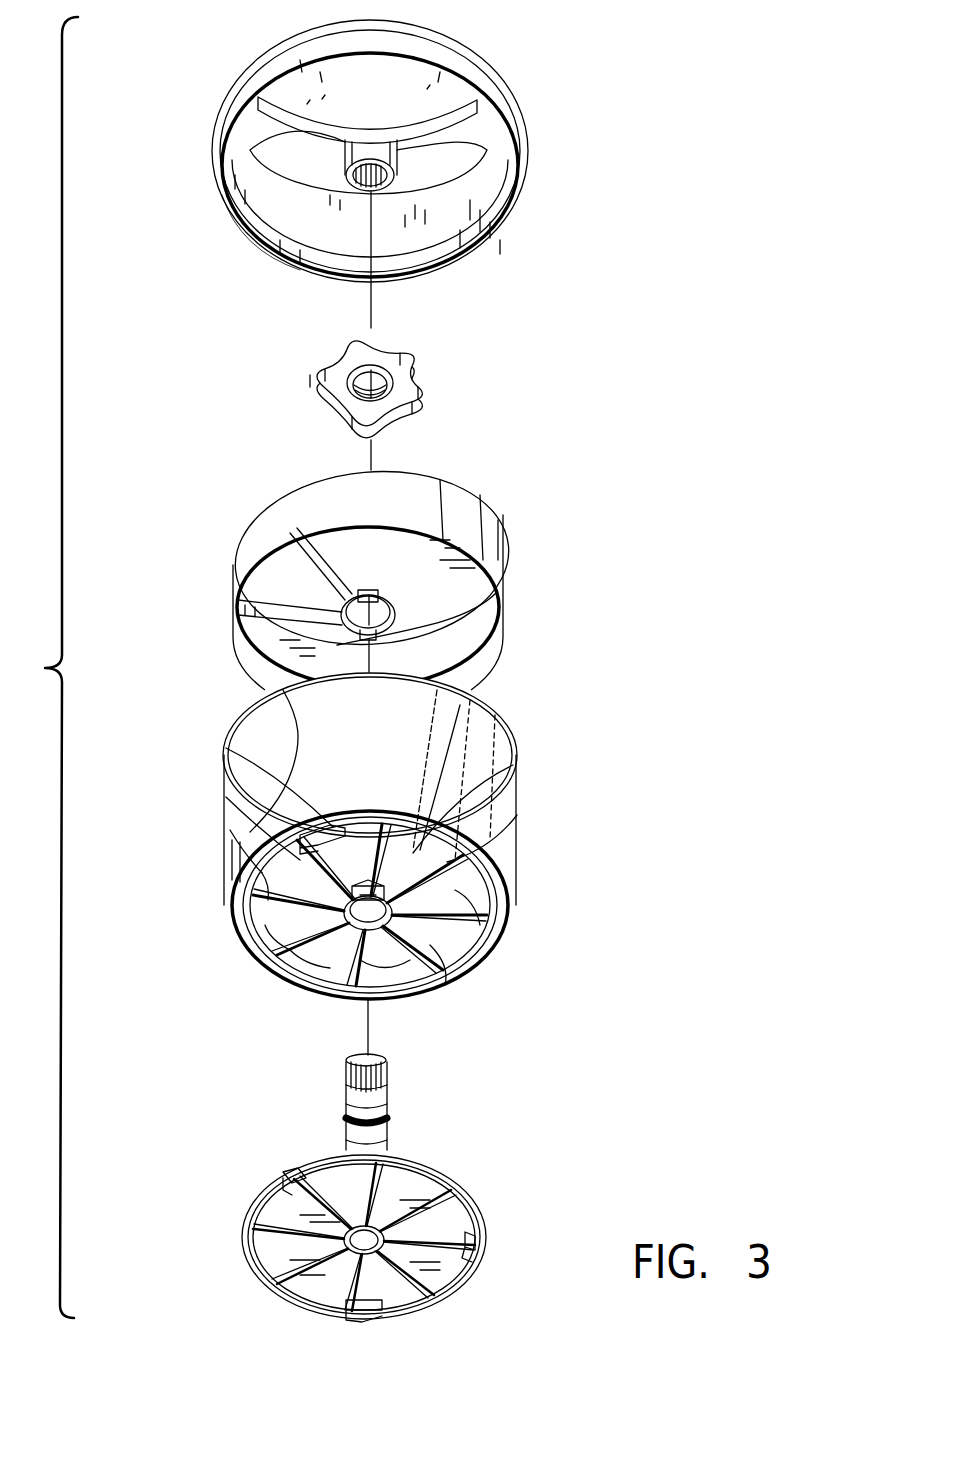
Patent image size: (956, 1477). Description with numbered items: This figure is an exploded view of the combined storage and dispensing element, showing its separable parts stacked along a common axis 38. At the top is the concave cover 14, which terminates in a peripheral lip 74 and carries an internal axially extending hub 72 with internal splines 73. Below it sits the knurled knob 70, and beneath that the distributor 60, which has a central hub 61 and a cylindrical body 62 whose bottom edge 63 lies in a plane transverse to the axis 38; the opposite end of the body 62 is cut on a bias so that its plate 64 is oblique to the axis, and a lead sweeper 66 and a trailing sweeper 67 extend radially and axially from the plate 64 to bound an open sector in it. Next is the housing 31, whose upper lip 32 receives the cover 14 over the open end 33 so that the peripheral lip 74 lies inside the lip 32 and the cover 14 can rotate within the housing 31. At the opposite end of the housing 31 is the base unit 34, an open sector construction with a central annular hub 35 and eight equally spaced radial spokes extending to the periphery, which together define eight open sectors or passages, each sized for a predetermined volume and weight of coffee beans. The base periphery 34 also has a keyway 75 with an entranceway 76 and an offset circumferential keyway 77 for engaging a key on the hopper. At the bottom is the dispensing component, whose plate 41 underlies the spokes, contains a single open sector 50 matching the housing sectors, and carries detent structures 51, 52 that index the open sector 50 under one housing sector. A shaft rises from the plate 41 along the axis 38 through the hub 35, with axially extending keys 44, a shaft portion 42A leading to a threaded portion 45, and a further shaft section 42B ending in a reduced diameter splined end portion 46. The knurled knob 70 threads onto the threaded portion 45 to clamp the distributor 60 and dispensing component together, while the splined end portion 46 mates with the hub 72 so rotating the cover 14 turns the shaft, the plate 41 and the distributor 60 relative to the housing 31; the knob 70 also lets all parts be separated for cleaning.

The cover 14 is at (402, 160).
The internal axially extending hub 72 is at (385, 148).
The internal splines 73 is at (362, 188).
The peripheral lip 74 is at (478, 235).
The axis 38 is at (373, 287).
The knurled knob 70 is at (323, 360).
The distributor 60 is at (366, 559).
The cylindrical body 62 is at (253, 557).
The bottom edge 63 is at (498, 648).
The plate 64 is at (262, 648).
The trailing sweeper 67 is at (318, 555).
The lead sweeper 66 is at (268, 610).
The central hub 61 is at (398, 608).
The housing 31 is at (383, 854).
The upper lip 32 is at (227, 750).
The open end 33 is at (248, 742).
The keyway 75 is at (227, 751).
The offset circumferential keyway 77 is at (247, 797).
The entranceway 76 is at (232, 822).
The base unit 34 is at (500, 902).
The central annular hub 35 is at (358, 930).
The keys 44 is at (360, 1110).
The threaded portion 45 is at (348, 1055).
The reduced diameter end portion 46 is at (385, 1067).
The shaft section 42B is at (353, 1100).
The shaft portion 42A is at (390, 1130).
The open sector 50 is at (361, 1254).
The plate 41 is at (443, 1273).
The detent structure 51 is at (283, 1197).
The detent structure 52 is at (373, 1308).